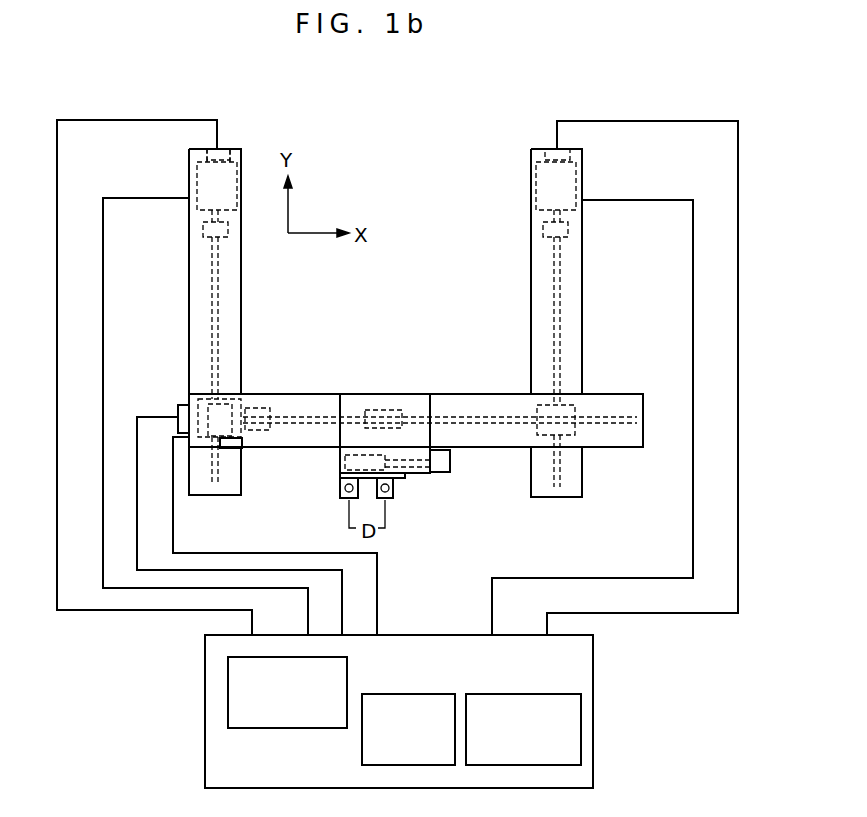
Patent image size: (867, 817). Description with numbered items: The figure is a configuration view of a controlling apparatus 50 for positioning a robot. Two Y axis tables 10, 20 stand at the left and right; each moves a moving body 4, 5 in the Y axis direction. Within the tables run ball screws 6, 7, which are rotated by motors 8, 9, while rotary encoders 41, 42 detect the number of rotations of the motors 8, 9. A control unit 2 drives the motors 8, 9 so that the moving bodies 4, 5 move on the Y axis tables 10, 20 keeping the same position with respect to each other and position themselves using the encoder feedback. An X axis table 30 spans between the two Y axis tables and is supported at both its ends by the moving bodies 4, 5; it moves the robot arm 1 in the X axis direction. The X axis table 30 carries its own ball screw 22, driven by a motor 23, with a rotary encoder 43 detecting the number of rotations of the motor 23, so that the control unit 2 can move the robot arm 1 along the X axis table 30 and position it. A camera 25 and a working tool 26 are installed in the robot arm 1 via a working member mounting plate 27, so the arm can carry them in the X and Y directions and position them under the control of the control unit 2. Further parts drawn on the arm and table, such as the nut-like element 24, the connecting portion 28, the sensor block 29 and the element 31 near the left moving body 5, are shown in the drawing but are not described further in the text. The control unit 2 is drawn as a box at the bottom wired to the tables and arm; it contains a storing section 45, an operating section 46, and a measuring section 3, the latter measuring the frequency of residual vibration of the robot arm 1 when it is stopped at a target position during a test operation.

The robot arm 1 is at (430, 407).
The control unit 2 is at (580, 670).
The measuring section 3 is at (227, 685).
The moving body 4 is at (590, 402).
The moving body 5 is at (200, 393).
The ball screw 6 is at (560, 283).
The ball screw 7 is at (207, 255).
The motor 8 is at (575, 203).
The motor 9 is at (197, 180).
The Y axis table 10 is at (583, 335).
The Y axis table 20 is at (190, 298).
The ball screw 22 is at (313, 417).
The motor 23 is at (257, 432).
The nut 24 is at (390, 410).
The camera 25 is at (338, 490).
The working tool 26 is at (395, 492).
The working member mounting plate 27 is at (405, 478).
The connecting member 28 is at (365, 455).
The X position sensor 29 is at (432, 473).
The X axis table 30 is at (263, 393).
The Y position sensor 31 is at (232, 448).
The rotary encoder 41 is at (583, 152).
The rotary encoder 42 is at (220, 152).
The rotary encoder 43 is at (180, 412).
The storing section 45 is at (362, 755).
The operating section 46 is at (578, 732).
The controlling apparatus for positioning a robot 50 is at (486, 166).